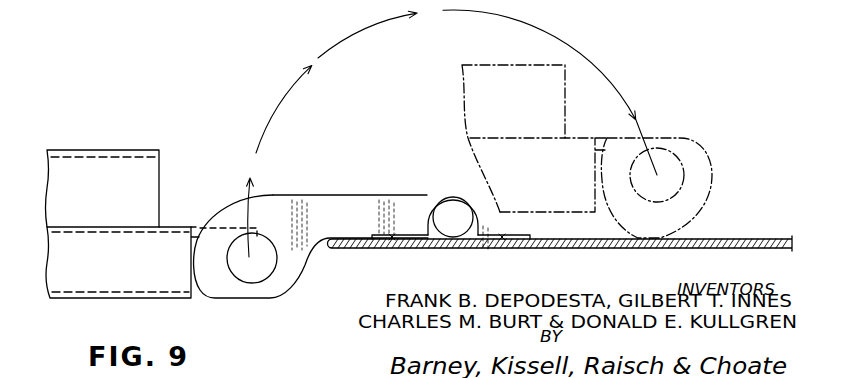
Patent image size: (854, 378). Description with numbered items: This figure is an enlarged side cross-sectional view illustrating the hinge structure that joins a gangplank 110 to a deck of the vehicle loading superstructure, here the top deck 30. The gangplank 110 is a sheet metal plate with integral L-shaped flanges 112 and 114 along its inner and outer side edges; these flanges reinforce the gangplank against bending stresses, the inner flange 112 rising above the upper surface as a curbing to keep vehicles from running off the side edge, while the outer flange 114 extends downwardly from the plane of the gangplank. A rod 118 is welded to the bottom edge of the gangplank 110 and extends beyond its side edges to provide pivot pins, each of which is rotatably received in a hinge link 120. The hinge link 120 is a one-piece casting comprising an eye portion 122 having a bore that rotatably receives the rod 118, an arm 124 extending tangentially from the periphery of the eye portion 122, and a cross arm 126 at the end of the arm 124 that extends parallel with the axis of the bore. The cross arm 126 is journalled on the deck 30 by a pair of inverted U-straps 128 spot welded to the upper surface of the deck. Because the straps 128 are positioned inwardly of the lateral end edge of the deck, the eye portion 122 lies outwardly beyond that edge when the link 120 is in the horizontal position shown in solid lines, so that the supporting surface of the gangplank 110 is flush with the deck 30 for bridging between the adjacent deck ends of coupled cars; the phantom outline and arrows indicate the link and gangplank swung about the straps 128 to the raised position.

The top deck 30 is at (740, 241).
The gangplank 110 is at (197, 230).
The inner flange 112 is at (143, 162).
The outer flange 114 is at (70, 282).
The rod 118 is at (262, 272).
The hinge link 120 is at (304, 184).
The eye portion 122 is at (223, 290).
The arm 124 is at (392, 204).
The cross arm 126 is at (457, 231).
The inverted U-straps 128 is at (448, 192).